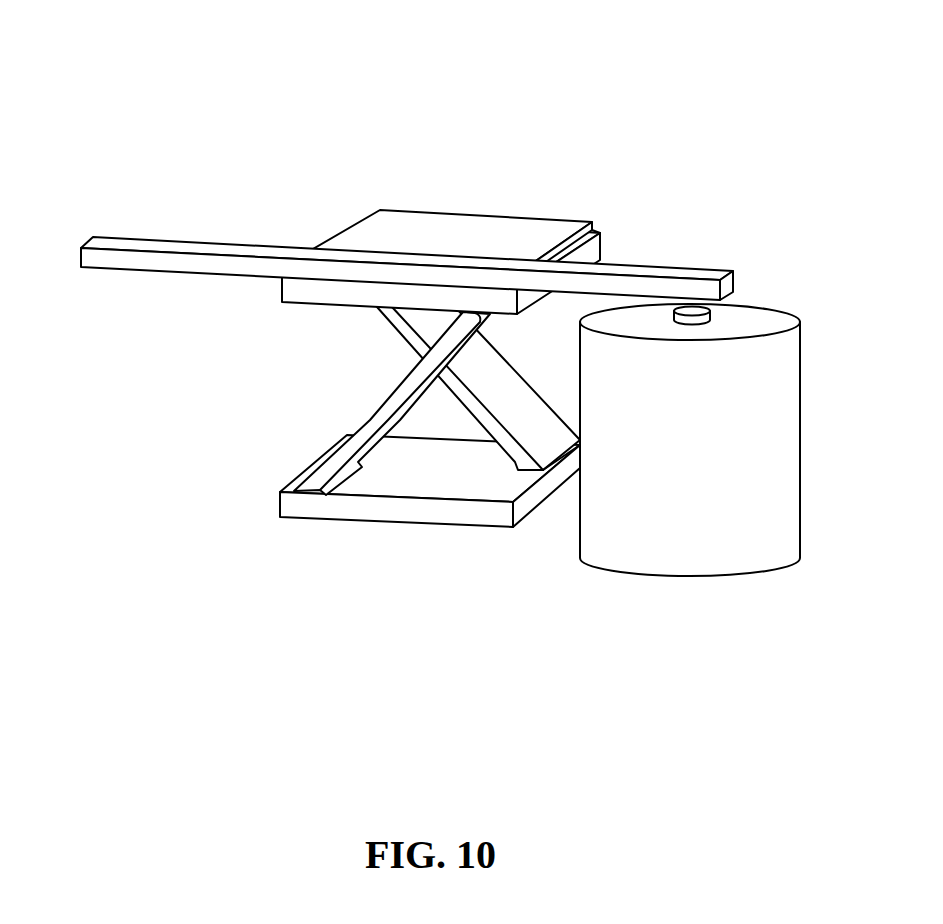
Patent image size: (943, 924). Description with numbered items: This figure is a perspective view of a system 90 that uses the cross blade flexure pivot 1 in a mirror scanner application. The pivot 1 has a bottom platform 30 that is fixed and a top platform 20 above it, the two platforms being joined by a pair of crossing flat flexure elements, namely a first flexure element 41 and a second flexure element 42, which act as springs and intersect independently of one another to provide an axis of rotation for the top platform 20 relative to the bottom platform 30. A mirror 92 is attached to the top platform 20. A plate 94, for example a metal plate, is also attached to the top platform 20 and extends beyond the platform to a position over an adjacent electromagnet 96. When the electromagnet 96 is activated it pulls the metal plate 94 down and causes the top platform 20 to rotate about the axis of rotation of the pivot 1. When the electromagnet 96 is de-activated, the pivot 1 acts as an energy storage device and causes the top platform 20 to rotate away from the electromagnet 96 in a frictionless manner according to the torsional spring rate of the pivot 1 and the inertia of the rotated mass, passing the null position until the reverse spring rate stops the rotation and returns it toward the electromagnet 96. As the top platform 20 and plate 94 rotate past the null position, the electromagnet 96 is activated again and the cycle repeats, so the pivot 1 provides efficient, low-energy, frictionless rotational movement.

The system 90 is at (410, 56).
The cross blade flexure pivot 1 is at (252, 284).
The top platform 20 is at (300, 308).
The bottom platform 30 is at (418, 513).
The first flexure element 41 is at (368, 427).
The second flexure element 42 is at (493, 373).
The mirror 92 is at (483, 233).
The plate 94 is at (647, 275).
The electromagnet 96 is at (650, 537).